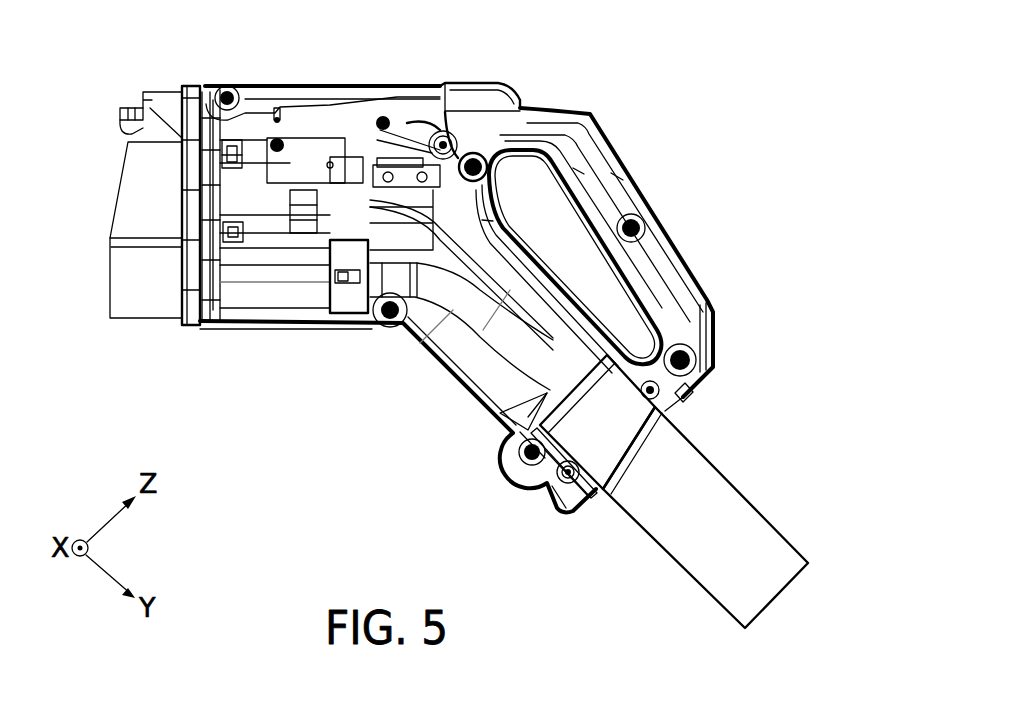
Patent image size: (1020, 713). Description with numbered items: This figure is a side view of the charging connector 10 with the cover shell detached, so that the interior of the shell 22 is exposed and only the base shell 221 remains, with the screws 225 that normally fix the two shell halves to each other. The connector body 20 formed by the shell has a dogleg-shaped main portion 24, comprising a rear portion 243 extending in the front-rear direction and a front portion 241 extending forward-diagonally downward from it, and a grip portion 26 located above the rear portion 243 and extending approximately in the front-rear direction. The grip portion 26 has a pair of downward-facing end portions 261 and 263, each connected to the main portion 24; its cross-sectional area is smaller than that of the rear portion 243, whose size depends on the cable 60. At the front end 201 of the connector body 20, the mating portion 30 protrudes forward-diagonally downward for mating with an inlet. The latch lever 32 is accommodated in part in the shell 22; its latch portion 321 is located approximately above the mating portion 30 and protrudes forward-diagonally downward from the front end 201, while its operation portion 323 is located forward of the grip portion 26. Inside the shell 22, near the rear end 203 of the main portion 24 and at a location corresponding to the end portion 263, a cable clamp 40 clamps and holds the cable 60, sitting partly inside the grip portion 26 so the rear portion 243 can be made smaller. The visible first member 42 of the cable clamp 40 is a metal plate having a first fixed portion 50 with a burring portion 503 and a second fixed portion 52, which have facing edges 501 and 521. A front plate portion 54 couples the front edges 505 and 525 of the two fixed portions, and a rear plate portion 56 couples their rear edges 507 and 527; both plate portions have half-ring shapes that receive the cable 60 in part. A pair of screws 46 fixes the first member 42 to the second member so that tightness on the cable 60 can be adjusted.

The charging connector 10 is at (638, 106).
The connector body 20 is at (477, 258).
The shell 22 is at (228, 276).
The main portion 24 is at (477, 258).
The grip portion 26 is at (633, 197).
The mating portion 30 is at (140, 222).
The latch lever 32 is at (292, 122).
The cable clamp 40 is at (601, 493).
The first member 42 is at (619, 478).
The screws 46 is at (714, 367).
The first fixed portion 50 is at (765, 311).
The second fixed portion 52 is at (539, 533).
The front plate portion 54 is at (550, 378).
The rear plate portion 56 is at (648, 445).
The cable 60 is at (750, 538).
The front end 201 is at (205, 225).
The rear end 203 is at (596, 503).
The base shell 221 is at (272, 327).
The screws 225 is at (224, 88).
The front portion 241 is at (330, 90).
The rear portion 243 is at (467, 392).
The end portion 261 is at (430, 98).
The end portion 263 is at (667, 415).
The latch portion 321 is at (120, 137).
The operation portion 323 is at (492, 92).
The facing edge 501 is at (700, 460).
The burring portion 503 is at (704, 333).
The front edge 505 is at (690, 335).
The rear edge 507 is at (687, 400).
The facing edge 521 is at (560, 438).
The front edge 525 is at (553, 472).
The rear edge 527 is at (562, 512).